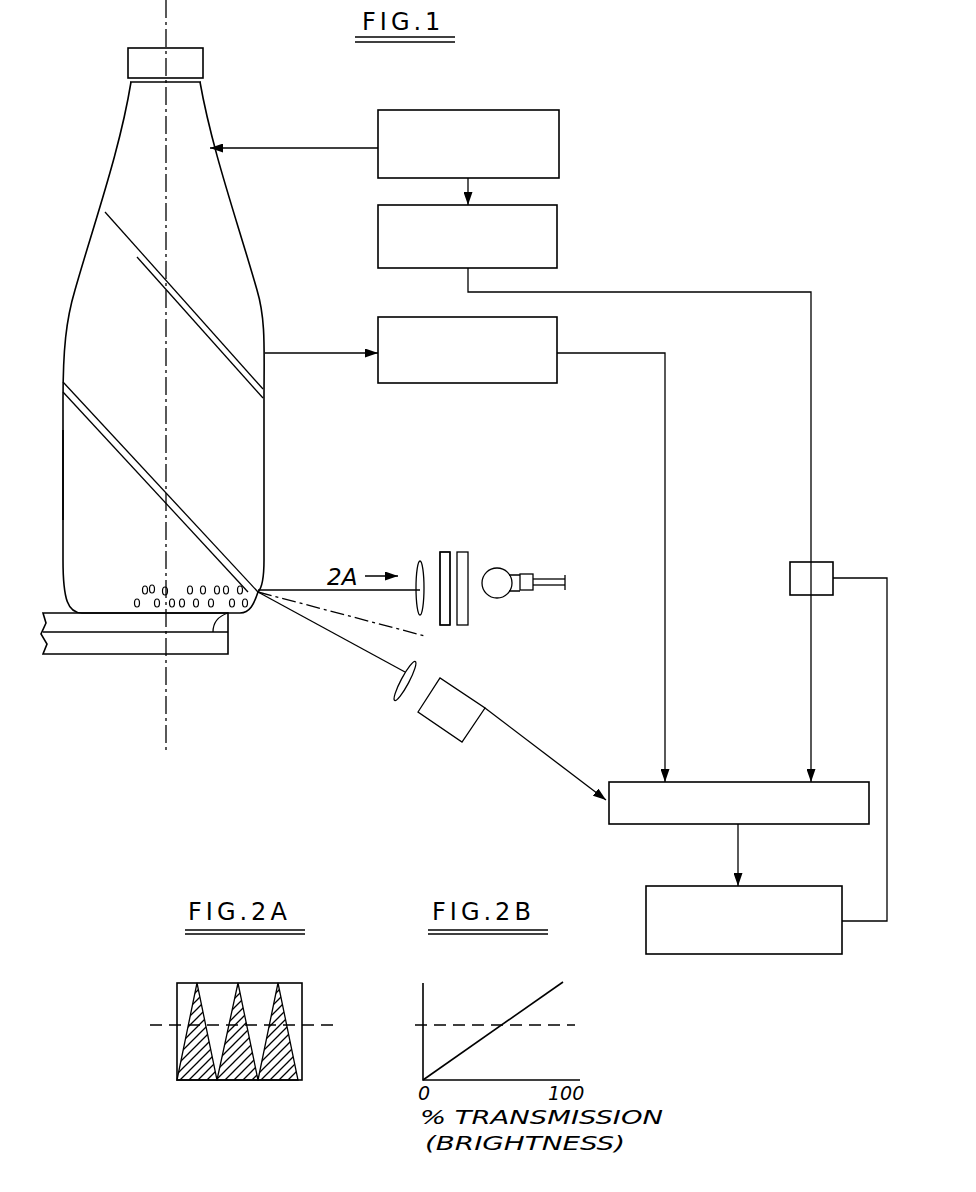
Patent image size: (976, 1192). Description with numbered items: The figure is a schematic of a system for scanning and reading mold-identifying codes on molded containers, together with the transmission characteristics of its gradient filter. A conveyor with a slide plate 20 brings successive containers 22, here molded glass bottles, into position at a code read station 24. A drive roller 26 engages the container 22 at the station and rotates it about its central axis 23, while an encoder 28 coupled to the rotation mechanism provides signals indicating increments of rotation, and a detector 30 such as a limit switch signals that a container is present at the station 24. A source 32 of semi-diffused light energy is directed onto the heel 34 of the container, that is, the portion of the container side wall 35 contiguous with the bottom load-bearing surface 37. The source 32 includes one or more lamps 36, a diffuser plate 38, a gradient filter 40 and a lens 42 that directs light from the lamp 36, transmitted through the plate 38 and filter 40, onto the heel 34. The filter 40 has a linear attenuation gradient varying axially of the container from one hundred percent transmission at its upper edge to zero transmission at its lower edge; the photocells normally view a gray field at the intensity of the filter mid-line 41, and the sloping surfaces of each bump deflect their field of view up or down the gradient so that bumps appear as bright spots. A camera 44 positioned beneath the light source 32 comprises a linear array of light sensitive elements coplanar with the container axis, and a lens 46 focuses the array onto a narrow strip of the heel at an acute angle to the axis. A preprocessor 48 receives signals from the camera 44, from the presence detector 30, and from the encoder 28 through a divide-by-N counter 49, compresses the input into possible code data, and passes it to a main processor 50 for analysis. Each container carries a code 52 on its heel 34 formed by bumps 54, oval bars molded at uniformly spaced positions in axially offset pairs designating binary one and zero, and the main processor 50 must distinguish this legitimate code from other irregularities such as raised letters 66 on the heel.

In FIG. 1, the slide plate 20 is at (124, 657).
In FIG. 1, the container 22 is at (90, 249).
In FIG. 1, the central axis 23 is at (168, 374).
In FIG. 1, the code read station 24 is at (624, 266).
In FIG. 1, the drive roller 26 is at (530, 110).
In FIG. 1, the encoder 28 is at (378, 241).
In FIG. 1, the detector 30 is at (470, 383).
In FIG. 1, the source of semi-diffused light energy 32 is at (446, 546).
In FIG. 1, the heel 34 is at (120, 605).
In FIG. 1, the container side wall 35 is at (82, 467).
In FIG. 1, the lamp 36 is at (525, 600).
In FIG. 1, the bottom load-bearing surface 37 is at (213, 633).
In FIG. 1, the diffuser plate 38 is at (470, 625).
In FIG. 1, the gradient filter 40 is at (495, 553).
In FIG. 2A, the gradient filter 40 is at (302, 998).
In FIG. 2A, the mid-line 41 is at (154, 1023).
In FIG. 2B, the mid-line 41 is at (443, 1024).
In FIG. 1, the lens 42 is at (420, 566).
In FIG. 1, the camera 44 is at (437, 727).
In FIG. 1, the lens 46 is at (392, 700).
In FIG. 1, the preprocessor 48 is at (740, 782).
In FIG. 1, the divide-by-N counter 49 is at (793, 594).
In FIG. 1, the main processor 50 is at (758, 956).
In FIG. 1, the code 52 is at (198, 582).
In FIG. 1, the bumps 54 is at (157, 605).
In FIG. 1, the raised letters 66 is at (94, 580).